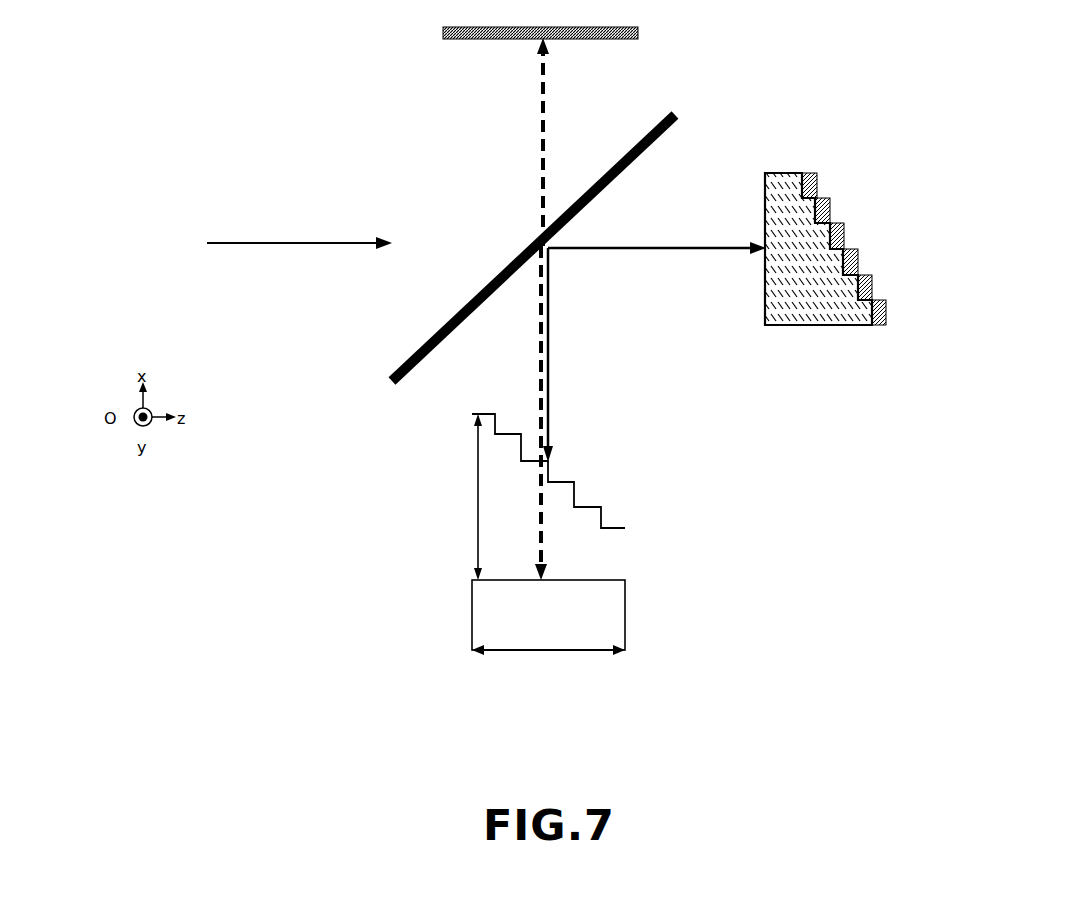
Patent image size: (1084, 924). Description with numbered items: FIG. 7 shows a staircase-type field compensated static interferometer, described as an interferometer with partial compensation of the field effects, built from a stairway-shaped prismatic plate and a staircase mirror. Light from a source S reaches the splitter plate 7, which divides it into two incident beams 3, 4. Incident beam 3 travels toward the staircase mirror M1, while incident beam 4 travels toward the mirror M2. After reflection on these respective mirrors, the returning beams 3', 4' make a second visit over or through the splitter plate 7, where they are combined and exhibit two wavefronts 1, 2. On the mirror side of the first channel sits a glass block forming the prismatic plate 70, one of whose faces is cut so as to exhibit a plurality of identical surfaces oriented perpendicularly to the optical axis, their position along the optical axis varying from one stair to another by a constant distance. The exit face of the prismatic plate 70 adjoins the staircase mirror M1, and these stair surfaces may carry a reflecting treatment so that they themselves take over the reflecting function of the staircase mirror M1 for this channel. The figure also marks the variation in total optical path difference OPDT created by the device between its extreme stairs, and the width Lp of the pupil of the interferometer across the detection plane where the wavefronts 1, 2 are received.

The wavefront 1 is at (635, 527).
The wavefront 2 is at (633, 581).
The incident beam 3 is at (657, 281).
The reflected beam 3' is at (580, 355).
The incident beam 4 is at (497, 142).
The reflected beam 4' is at (499, 413).
The splitter plate 7 is at (406, 358).
The prismatic plate 70 is at (784, 348).
The staircase mirror M1 is at (878, 327).
The mirror M2 is at (640, 31).
The source S is at (282, 240).
The variation in total optical path difference OPDT is at (447, 497).
The width of the pupil Lp is at (548, 664).